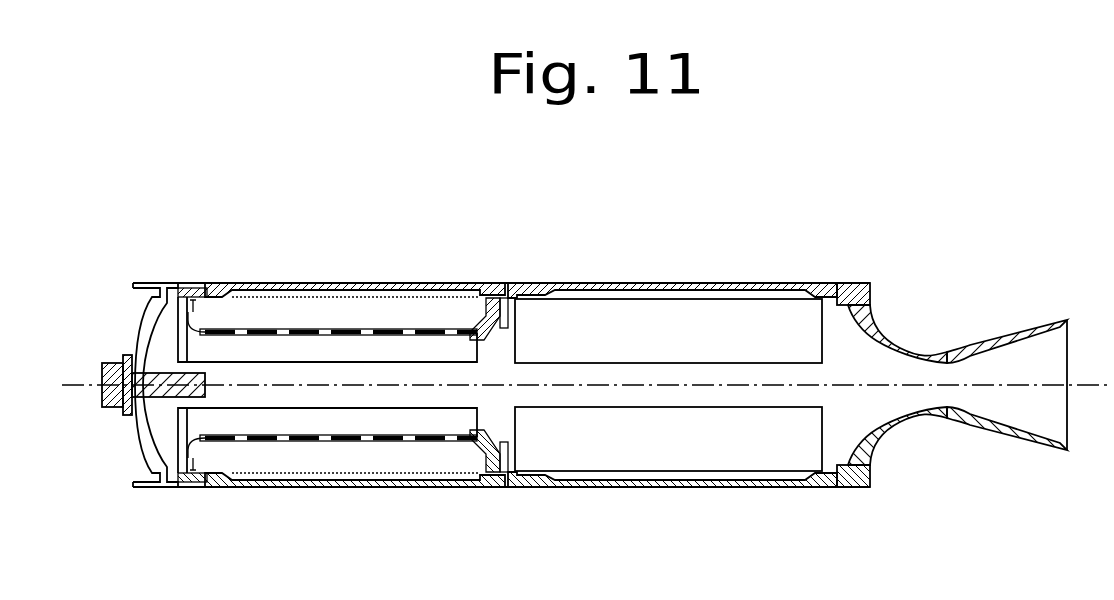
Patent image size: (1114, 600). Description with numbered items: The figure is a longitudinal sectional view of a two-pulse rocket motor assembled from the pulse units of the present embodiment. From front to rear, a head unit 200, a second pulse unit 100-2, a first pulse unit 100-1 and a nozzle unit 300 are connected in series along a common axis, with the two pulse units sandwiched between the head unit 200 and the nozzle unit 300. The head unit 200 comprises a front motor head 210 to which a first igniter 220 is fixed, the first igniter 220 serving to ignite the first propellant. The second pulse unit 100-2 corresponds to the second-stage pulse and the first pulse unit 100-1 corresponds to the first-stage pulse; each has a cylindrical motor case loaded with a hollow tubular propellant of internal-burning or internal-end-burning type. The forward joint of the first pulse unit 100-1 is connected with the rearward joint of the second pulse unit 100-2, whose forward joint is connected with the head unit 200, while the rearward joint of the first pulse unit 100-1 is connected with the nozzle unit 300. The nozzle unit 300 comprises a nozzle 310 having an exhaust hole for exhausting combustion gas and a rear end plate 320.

The head unit 200 is at (130, 419).
The front motor head 210 is at (140, 332).
The first igniter 220 is at (144, 418).
The second pulse unit 100-2 is at (490, 527).
The first pulse unit 100-1 is at (822, 527).
The nozzle unit 300 is at (951, 416).
The nozzle 310 is at (973, 342).
The rear end plate 320 is at (880, 430).